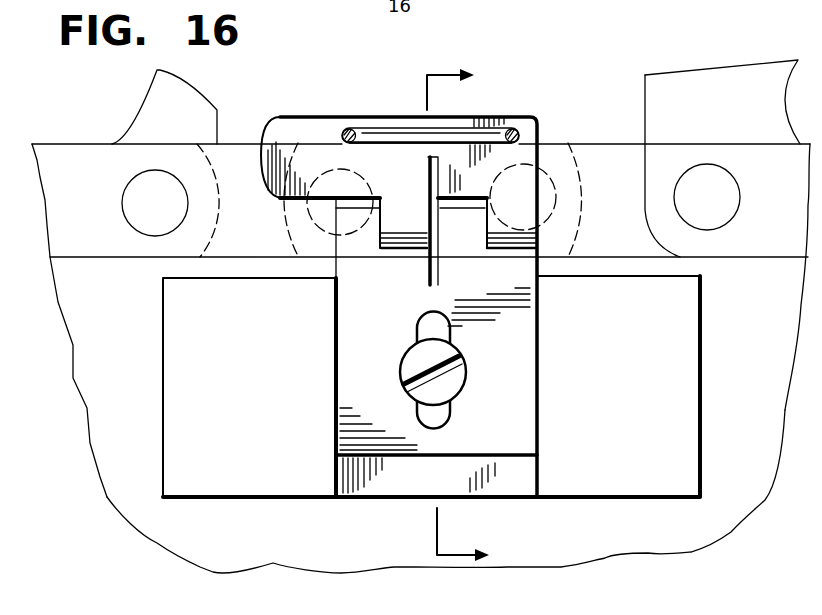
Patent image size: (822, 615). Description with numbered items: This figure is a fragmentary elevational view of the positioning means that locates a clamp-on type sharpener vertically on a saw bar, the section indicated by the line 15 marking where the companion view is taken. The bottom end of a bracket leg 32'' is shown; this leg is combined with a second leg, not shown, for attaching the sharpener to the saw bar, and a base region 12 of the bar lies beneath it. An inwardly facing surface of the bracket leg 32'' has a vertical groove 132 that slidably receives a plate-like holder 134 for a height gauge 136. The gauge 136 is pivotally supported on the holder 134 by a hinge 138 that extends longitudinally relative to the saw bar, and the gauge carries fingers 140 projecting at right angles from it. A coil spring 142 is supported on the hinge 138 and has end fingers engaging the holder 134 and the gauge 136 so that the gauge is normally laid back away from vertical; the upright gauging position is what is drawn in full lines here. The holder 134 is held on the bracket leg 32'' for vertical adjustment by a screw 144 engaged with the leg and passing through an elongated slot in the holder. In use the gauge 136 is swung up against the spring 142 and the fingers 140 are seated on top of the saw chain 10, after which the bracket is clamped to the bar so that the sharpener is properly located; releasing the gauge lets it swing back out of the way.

The saw chain 10 is at (68, 144).
The base bar 12 is at (107, 497).
The bracket leg 32'' is at (431, 405).
The vertical groove 132 is at (399, 472).
The plate-like holder 134 is at (502, 432).
The height gauge 136 is at (401, 122).
The hinge 138 is at (537, 190).
The fingers 140 is at (344, 129).
The coil spring 142 is at (431, 157).
The screw 144 is at (462, 368).
The section line 15- 15 is at (458, 303).